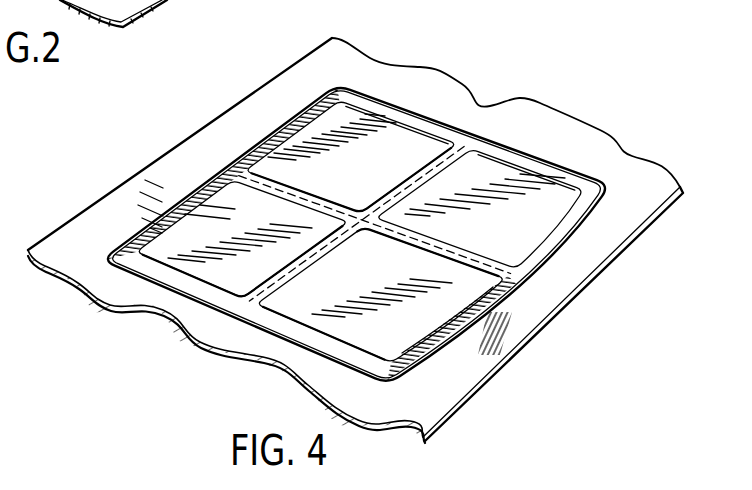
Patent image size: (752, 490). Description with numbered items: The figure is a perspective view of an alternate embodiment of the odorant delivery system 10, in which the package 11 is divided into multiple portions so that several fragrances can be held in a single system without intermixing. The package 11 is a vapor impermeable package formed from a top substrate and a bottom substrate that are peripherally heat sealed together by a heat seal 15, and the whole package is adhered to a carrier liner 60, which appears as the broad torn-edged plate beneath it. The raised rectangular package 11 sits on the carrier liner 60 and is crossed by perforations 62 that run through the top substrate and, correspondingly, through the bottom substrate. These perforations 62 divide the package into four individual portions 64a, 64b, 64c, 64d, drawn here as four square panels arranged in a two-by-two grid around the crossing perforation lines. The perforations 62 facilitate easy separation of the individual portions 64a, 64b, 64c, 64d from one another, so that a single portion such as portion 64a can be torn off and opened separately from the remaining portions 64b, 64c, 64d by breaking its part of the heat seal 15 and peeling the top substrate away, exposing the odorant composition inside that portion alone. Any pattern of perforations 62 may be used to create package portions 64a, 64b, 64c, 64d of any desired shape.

The odorant delivery system 10 is at (440, 46).
The package 11 is at (484, 80).
The heat seal 15 is at (647, 157).
The carrier liner 60 is at (97, 203).
The perforations 62 is at (238, 172).
The package portion 64a is at (328, 127).
The package portion 64b is at (163, 250).
The package portion 64c is at (407, 333).
The package portion 64d is at (601, 153).